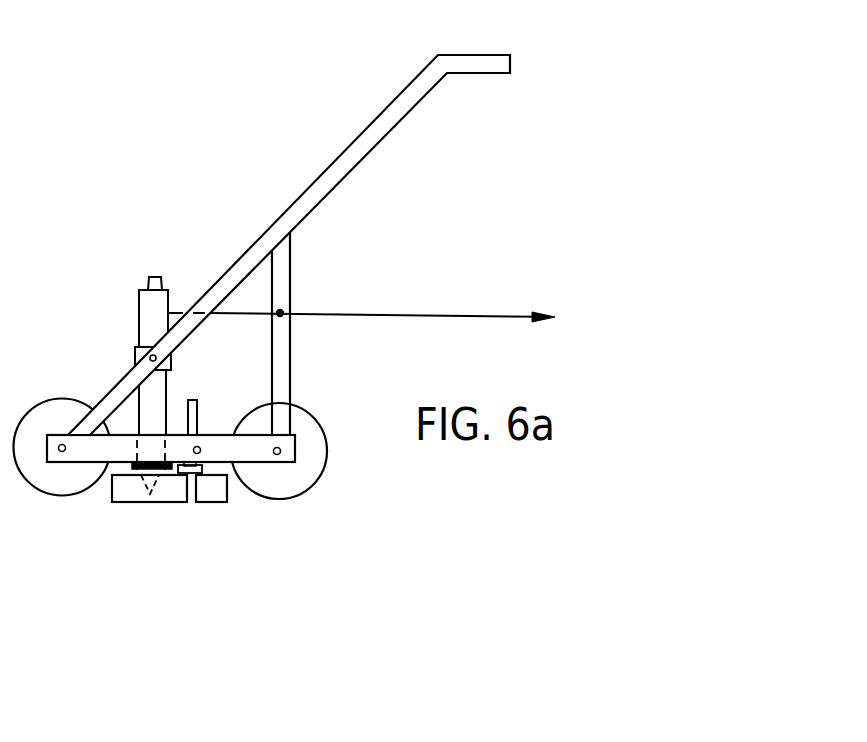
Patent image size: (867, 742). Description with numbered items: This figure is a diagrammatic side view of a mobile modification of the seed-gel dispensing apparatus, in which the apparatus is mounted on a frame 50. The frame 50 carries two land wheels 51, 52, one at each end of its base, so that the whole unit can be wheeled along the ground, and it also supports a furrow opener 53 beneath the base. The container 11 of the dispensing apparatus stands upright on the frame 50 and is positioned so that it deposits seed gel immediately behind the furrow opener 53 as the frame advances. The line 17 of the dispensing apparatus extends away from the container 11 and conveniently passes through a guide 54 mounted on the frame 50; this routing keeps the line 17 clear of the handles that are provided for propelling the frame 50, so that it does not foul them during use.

The container 11 is at (151, 305).
The line 17 is at (443, 315).
The frame 50 is at (308, 218).
The land wheel 51 is at (312, 438).
The land wheel 52 is at (60, 487).
The furrow opener 53 is at (173, 490).
The guide 54 is at (304, 734).